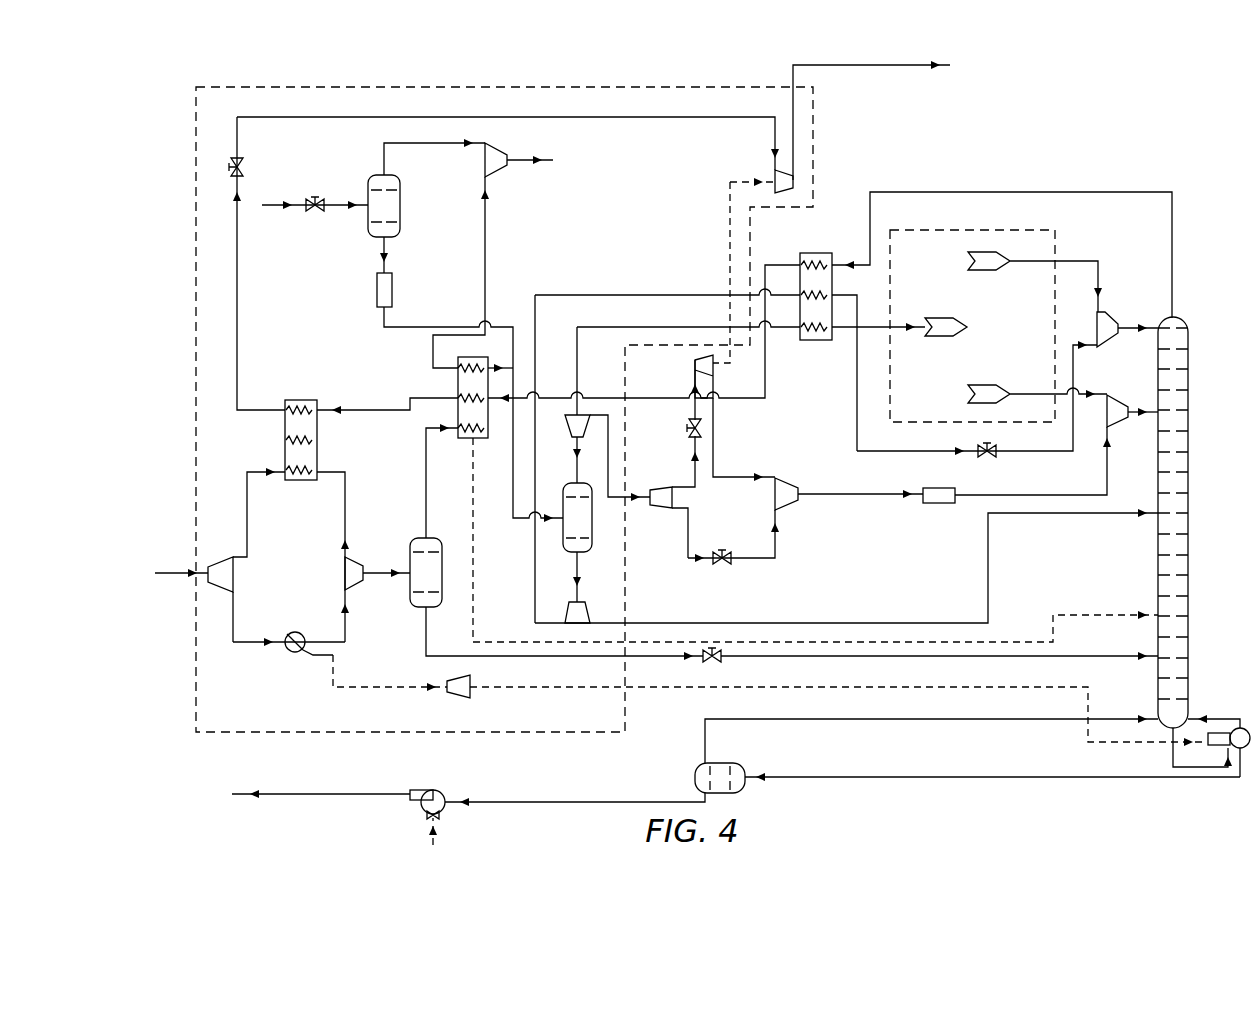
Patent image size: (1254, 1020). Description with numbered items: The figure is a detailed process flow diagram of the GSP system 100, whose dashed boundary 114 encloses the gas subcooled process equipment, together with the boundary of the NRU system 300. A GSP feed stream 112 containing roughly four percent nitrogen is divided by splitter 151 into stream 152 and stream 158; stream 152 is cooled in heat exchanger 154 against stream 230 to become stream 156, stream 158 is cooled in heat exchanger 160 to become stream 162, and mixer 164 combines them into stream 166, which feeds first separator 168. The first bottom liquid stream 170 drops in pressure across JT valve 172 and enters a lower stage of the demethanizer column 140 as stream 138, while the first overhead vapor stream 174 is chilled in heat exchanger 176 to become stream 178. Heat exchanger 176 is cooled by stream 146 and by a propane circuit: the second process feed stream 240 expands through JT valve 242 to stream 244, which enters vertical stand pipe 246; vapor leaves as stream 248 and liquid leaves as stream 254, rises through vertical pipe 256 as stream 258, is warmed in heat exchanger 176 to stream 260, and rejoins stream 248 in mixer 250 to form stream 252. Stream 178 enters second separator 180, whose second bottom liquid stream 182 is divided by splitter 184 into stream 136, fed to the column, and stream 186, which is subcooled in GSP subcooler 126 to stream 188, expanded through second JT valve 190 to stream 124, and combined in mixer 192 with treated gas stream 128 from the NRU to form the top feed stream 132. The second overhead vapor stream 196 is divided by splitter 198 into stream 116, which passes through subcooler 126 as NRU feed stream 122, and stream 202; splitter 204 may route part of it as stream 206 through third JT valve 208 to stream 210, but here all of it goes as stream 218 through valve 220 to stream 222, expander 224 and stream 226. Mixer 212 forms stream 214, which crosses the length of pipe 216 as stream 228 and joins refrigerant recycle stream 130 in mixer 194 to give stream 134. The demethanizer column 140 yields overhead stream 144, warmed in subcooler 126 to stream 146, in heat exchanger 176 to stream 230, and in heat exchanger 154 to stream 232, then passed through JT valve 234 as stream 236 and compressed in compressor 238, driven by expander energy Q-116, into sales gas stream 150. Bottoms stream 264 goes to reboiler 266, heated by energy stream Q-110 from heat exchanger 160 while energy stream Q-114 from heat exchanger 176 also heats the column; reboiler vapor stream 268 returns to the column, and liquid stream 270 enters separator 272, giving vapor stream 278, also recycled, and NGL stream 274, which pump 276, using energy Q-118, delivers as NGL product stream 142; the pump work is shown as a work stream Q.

The GSP system 100 is at (1146, 105).
The GSP feed stream 112 is at (180, 570).
The pretreatment section 114 is at (250, 83).
The stream 116 is at (657, 328).
The NRU feed stream 122 is at (906, 327).
The stream 124 is at (1036, 453).
The GSP subcooler 126 is at (818, 252).
The treated gas stream 128 is at (1078, 258).
The refrigerant recycle stream 130 is at (1040, 392).
The stream 132 is at (1126, 326).
The stream 134 is at (1134, 420).
The stream 136 is at (856, 623).
The stream 138 is at (897, 660).
The demethanizer column 140 is at (1188, 585).
The NGL product stream 142 is at (316, 797).
The overhead stream 144 is at (970, 192).
The stream 146 is at (769, 372).
The sales gas stream 150 is at (874, 66).
The splitter 151 is at (215, 562).
The stream 152 is at (247, 515).
The heat exchanger 154 is at (285, 452).
The stream 156 is at (345, 503).
The stream 158 is at (233, 615).
The heat exchanger 160 is at (289, 654).
The stream 162 is at (350, 612).
The mixer 164 is at (345, 582).
The stream 166 is at (394, 570).
The first separator 168 is at (419, 537).
The first bottom liquid stream 170 is at (562, 656).
The Joule-Thomson valve 172 is at (716, 660).
The first overhead vapor stream 174 is at (424, 473).
The heat exchanger 176 is at (456, 384).
The stream 178 is at (514, 542).
The second separator 180 is at (592, 520).
The second bottom liquid stream 182 is at (577, 570).
The splitter 184 is at (590, 614).
The stream 186 is at (630, 295).
The stream 188 is at (857, 380).
The second JT valve 190 is at (982, 456).
The mixer 192 is at (1115, 311).
The mixer 194 is at (1128, 396).
The second overhead vapor stream 196 is at (577, 460).
The splitter 198 is at (582, 440).
The stream 202 is at (609, 458).
The splitter 204 is at (676, 496).
The stream 206 is at (690, 547).
The third JT valve 208 is at (725, 565).
The stream 210 is at (779, 560).
The mixer 212 is at (790, 482).
The stream 214 is at (855, 496).
The length of pipe 216 is at (939, 504).
The stream 218 is at (691, 486).
The valve 220 is at (700, 428).
The stream 222 is at (700, 411).
The expander 224 is at (694, 362).
The stream 226 is at (740, 477).
The stream 228 is at (1032, 495).
The stream 230 is at (363, 408).
The stream 232 is at (237, 290).
The JT valve 234 is at (243, 165).
The stream 236 is at (510, 117).
The compressor 238 is at (797, 177).
The second process feed stream 240 is at (290, 208).
The JT valve 242 is at (318, 213).
The stream 244 is at (352, 203).
The vertical stand pipe 246 is at (380, 174).
The stream 248 is at (423, 150).
The mixer 250 is at (506, 170).
The stream 252 is at (522, 160).
The stream 254 is at (388, 262).
The vertical pipe 256 is at (377, 292).
The stream 258 is at (422, 327).
The stream 260 is at (488, 262).
The bottoms stream 264 is at (1186, 768).
The reboiler 266 is at (1214, 748).
The vapor stream 268 is at (1222, 718).
The liquid stream 270 is at (995, 777).
The separator 272 is at (697, 775).
The NGL stream 274 is at (573, 801).
The pump 276 is at (433, 790).
The vapor stream 278 is at (917, 721).
The NRU system 300 is at (1040, 222).
The energy stream Q-110 is at (383, 689).
The energy stream Q-114 is at (1090, 614).
The energy stream Q-116 is at (730, 203).
The energy input Q-118 is at (430, 842).
The work stream Q is at (450, 694).